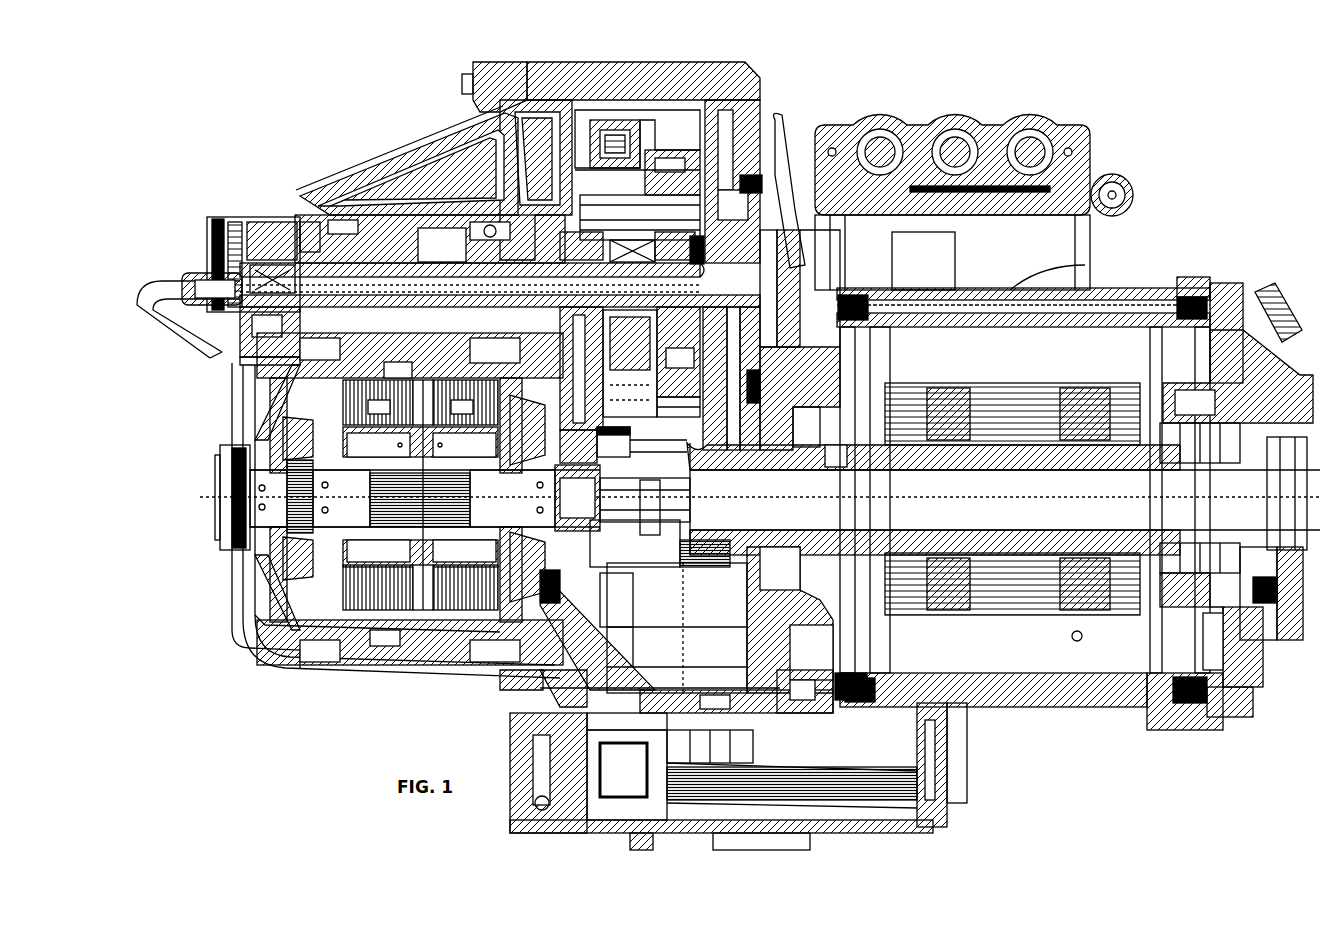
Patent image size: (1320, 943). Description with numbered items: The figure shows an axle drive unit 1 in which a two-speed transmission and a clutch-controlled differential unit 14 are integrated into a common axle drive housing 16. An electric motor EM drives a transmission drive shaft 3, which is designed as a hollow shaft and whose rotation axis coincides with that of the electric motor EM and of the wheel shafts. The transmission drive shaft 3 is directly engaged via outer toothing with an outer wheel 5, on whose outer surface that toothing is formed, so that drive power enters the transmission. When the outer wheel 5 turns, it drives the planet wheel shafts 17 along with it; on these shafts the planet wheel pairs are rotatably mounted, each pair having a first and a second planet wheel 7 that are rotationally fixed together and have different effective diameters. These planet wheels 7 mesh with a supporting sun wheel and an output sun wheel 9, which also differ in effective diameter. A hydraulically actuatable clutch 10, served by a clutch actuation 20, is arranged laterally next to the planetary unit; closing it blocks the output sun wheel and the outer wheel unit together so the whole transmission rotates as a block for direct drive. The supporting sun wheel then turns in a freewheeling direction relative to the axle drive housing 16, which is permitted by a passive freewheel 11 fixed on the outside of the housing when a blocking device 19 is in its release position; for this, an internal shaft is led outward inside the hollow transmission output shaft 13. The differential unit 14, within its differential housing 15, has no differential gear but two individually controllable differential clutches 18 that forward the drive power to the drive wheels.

The axle drive unit 1 is at (314, 114).
The transmission drive shaft 3 is at (955, 531).
The outer wheel 5 is at (770, 100).
The planet wheels 7 is at (686, 366).
The supporting sun wheel/output sun wheel 9 is at (632, 254).
The clutch 10 is at (642, 442).
The passive freewheel (locking device) 11 is at (207, 240).
The transmission output shaft 13 is at (430, 184).
The differential unit 14 is at (340, 668).
The differential housing 15 is at (410, 499).
The axle drive housing 16 is at (620, 66).
The planet wheel shaft 17 is at (638, 175).
The differential clutches 18 is at (420, 495).
The blocking device 19 is at (238, 232).
The clutch actuation 20 is at (601, 385).
The electric motor EM is at (1135, 288).